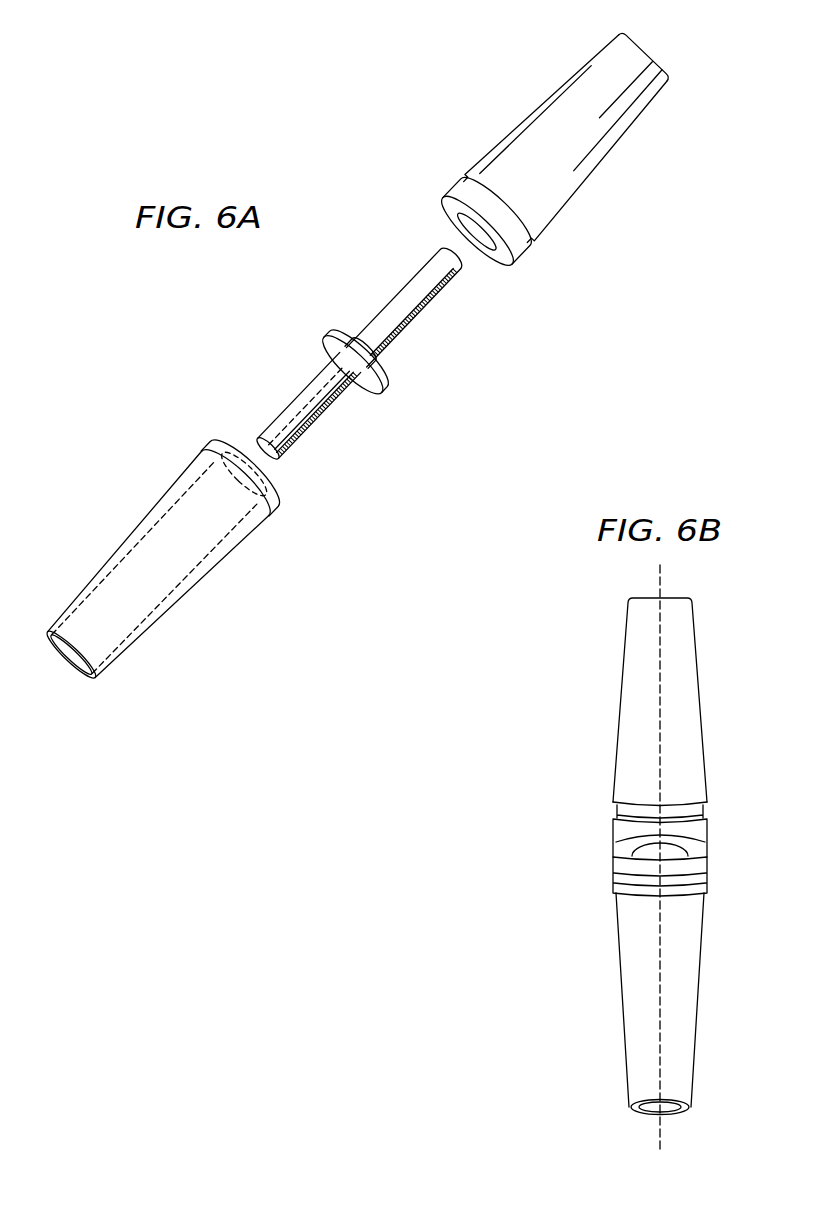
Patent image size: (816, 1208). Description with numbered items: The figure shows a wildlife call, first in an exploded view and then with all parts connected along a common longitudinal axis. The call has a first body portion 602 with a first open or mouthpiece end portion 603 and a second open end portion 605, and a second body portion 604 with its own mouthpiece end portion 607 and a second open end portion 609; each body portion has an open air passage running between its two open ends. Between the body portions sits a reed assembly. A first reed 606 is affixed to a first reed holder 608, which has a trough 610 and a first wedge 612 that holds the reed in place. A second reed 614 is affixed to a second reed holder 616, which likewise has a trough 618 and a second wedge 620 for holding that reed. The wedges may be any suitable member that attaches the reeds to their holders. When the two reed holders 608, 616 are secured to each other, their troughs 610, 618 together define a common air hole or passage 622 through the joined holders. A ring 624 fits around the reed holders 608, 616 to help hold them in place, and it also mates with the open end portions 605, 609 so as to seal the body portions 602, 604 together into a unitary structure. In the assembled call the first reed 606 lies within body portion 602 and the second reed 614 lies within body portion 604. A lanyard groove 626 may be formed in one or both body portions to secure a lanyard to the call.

In FIG. 6A, the first body portion 602 is at (133, 645).
In FIG. 6B, the first body portion 602 is at (697, 1050).
In FIG. 6A, the first open or mouthpiece end portion 603 is at (70, 657).
In FIG. 6A, the second body portion 604 is at (597, 168).
In FIG. 6B, the second body portion 604 is at (698, 688).
In FIG. 6A, the second open end portion 605 is at (272, 502).
In FIG. 6A, the first reed 606 is at (264, 430).
In FIG. 6A, the first open or mouthpiece end portion 607 is at (651, 54).
In FIG. 6A, the first reed holder 608 is at (345, 398).
In FIG. 6A, the second open end portion 609 is at (487, 253).
In FIG. 6A, the trough 610 is at (310, 425).
In FIG. 6A, the first wedge 612 is at (328, 376).
In FIG. 6A, the second reed 614 is at (453, 280).
In FIG. 6A, the second reed holder 616 is at (376, 312).
In FIG. 6A, the trough 618 is at (428, 272).
In FIG. 6A, the second wedge 620 is at (380, 358).
In FIG. 6A, the common air hole or passage 622 is at (343, 325).
In FIG. 6A, the ring 624 is at (390, 392).
In FIG. 6B, the ring 624 is at (690, 850).
In FIG. 6A, the lanyard groove 626 is at (188, 465).